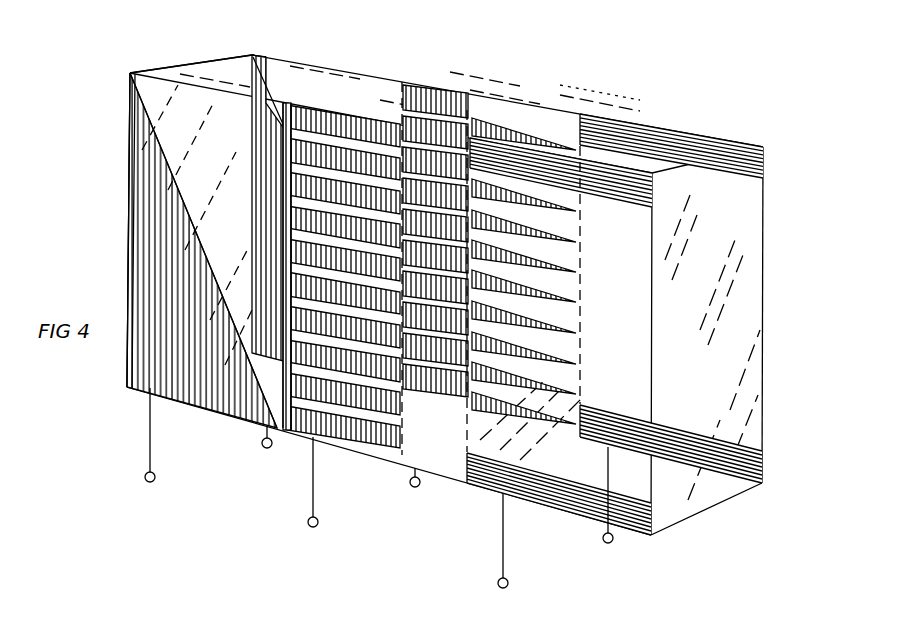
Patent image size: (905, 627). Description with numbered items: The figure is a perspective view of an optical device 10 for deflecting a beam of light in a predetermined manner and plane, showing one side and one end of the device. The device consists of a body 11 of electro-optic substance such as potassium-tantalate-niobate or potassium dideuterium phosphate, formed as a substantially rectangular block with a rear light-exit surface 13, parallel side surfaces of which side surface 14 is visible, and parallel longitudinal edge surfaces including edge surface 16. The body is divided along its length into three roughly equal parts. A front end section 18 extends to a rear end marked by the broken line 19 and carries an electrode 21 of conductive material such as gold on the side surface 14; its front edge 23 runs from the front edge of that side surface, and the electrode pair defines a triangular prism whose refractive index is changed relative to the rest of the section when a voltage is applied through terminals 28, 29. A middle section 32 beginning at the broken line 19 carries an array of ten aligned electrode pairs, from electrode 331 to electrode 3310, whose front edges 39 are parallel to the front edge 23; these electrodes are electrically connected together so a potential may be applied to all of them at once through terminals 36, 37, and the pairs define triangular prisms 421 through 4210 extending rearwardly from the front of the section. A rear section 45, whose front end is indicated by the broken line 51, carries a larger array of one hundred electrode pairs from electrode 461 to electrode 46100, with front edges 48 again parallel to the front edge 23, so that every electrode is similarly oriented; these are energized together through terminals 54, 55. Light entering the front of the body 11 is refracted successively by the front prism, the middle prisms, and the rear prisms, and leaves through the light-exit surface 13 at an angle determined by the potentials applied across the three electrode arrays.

The optical device 10 is at (797, 131).
The body 11 is at (768, 286).
The rear light-exit surface 13 is at (748, 348).
The side surface 14 is at (633, 311).
The longitudinal edge surface 16 is at (301, 72).
The front end section 18 is at (150, 84).
The broken line 19 is at (375, 85).
The electrode 21 is at (194, 396).
The front edge of electrode 23 is at (128, 276).
The terminal 28 is at (145, 477).
The terminal 29 is at (262, 443).
The middle section 32 is at (494, 100).
The electrode 3310 is at (328, 124).
The electrode 331 is at (297, 433).
The terminal 36 is at (308, 522).
The terminal 37 is at (410, 483).
The front edge of electrodes 39 is at (283, 144).
The prism 4210 is at (368, 137).
The prism 421 is at (348, 437).
The rear section 45 is at (724, 129).
The electrode 46100 is at (593, 160).
The electrode 461 is at (481, 488).
The front edge of electrodes 48 is at (462, 485).
The broken line 51 is at (563, 118).
The terminal 54 is at (498, 583).
The terminal 55 is at (603, 538).